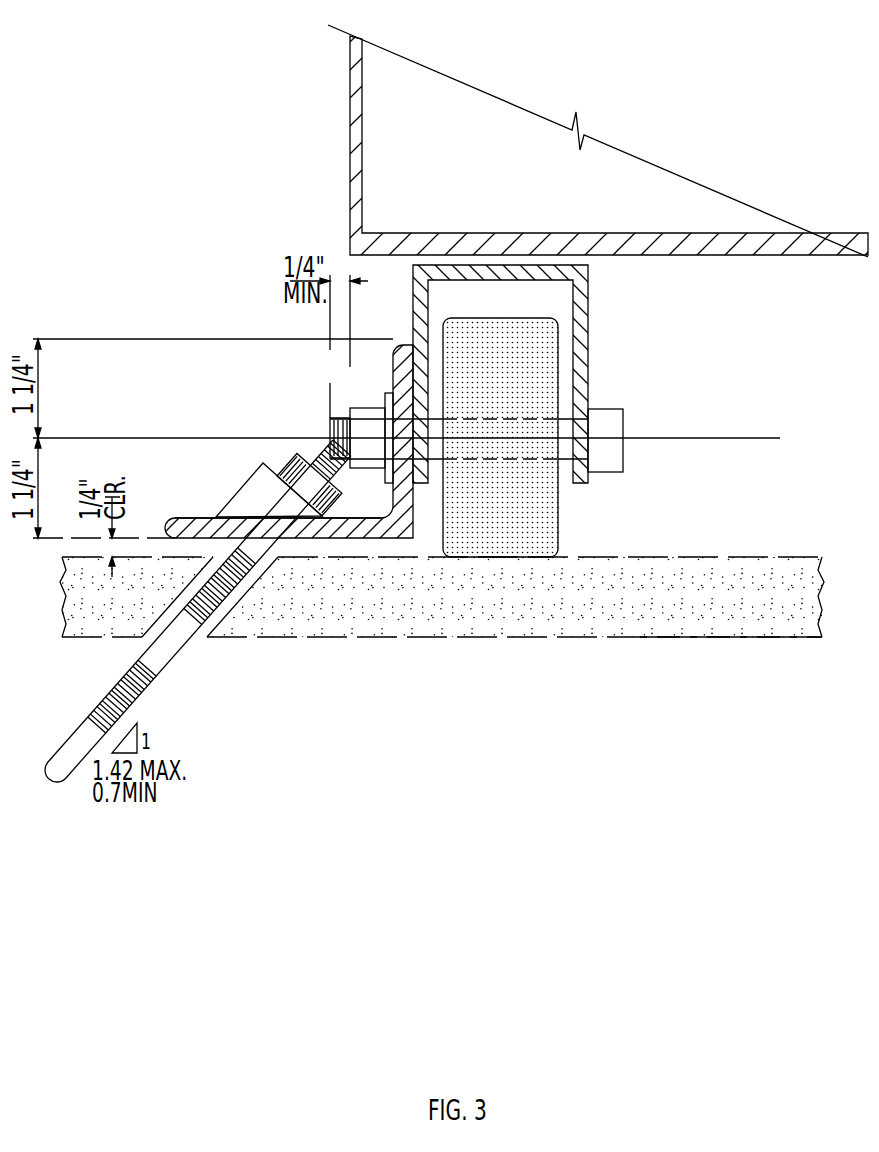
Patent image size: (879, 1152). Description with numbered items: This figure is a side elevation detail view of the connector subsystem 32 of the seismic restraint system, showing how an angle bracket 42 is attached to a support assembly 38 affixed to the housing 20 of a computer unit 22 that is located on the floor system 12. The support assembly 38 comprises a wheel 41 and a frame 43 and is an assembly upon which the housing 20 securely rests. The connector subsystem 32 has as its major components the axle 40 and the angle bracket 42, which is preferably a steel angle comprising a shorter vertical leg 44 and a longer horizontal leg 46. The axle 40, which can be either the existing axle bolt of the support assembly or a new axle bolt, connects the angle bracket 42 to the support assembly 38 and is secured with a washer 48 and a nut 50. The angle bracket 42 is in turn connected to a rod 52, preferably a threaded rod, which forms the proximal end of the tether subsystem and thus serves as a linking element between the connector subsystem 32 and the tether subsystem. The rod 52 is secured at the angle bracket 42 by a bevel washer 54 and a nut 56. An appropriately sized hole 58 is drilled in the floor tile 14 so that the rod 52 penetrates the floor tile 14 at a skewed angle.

The floor system 12 is at (673, 558).
The floor tile 14 is at (733, 625).
The housing 20 is at (430, 108).
The computer unit 22 is at (350, 97).
The connector subsystem 32 is at (313, 207).
The support assembly 38 is at (604, 289).
The axle 40 is at (607, 463).
The wheel 41 is at (493, 548).
The angle bracket 42 is at (308, 537).
The frame 43 is at (580, 275).
The vertical leg 44 is at (393, 350).
The horizontal leg 46 is at (197, 515).
The washer 48 is at (385, 398).
The nut 50 is at (370, 465).
The rod 52 is at (143, 657).
The bevel washer 54 is at (257, 478).
The nut 56 is at (317, 523).
The hole 58 is at (207, 637).